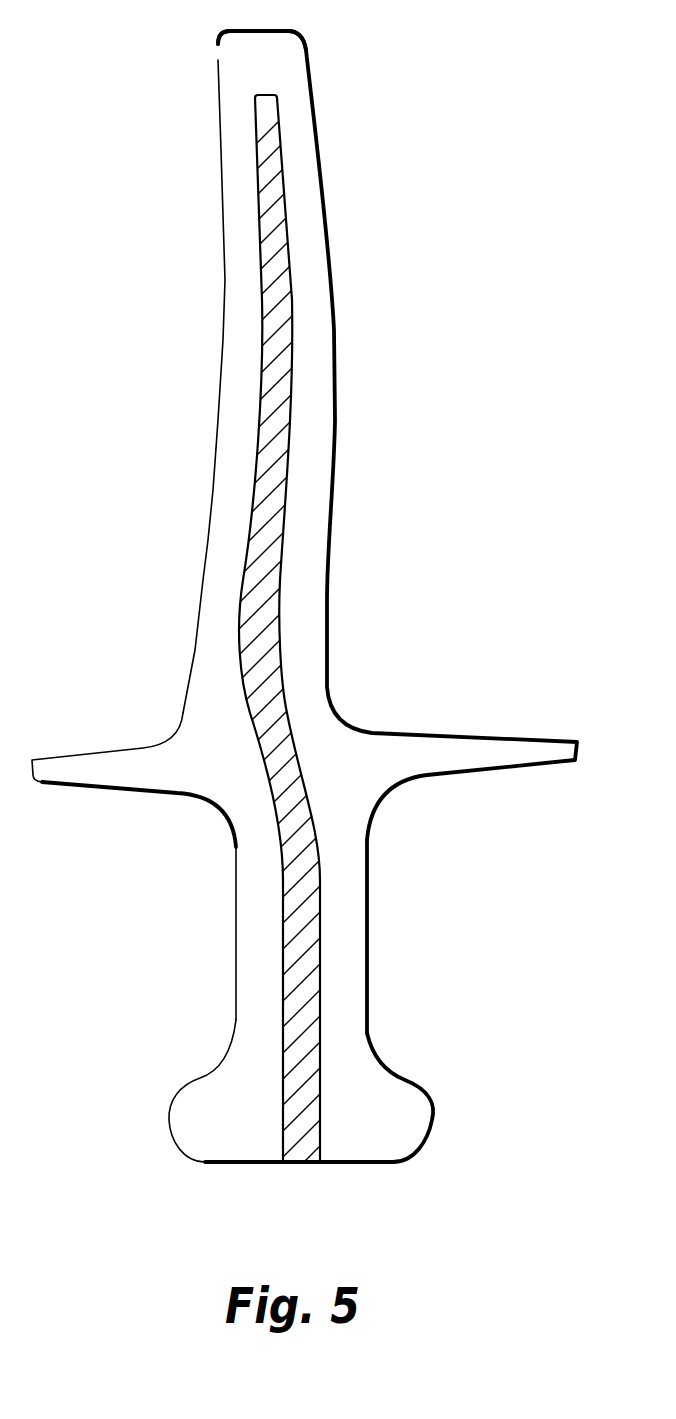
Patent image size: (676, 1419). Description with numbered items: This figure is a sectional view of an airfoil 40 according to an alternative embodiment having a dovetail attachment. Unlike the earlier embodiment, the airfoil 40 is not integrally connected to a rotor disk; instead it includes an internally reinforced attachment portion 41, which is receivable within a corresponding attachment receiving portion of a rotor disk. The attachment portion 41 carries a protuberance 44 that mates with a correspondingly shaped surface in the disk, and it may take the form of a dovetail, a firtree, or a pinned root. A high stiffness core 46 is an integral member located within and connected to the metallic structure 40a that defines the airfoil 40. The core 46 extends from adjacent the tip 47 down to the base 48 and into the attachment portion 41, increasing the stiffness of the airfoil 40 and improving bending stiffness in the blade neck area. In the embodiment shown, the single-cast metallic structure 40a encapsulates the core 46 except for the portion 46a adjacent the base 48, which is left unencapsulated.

The airfoil 40 is at (412, 444).
The metallic structure 40a is at (227, 467).
The attachment portion 41 is at (368, 997).
The protuberance 44 is at (432, 1135).
The high stiffness core 46 is at (273, 277).
The portion of the core adjacent the base 46a is at (298, 1167).
The tip 47 is at (292, 68).
The base 48 is at (335, 1167).